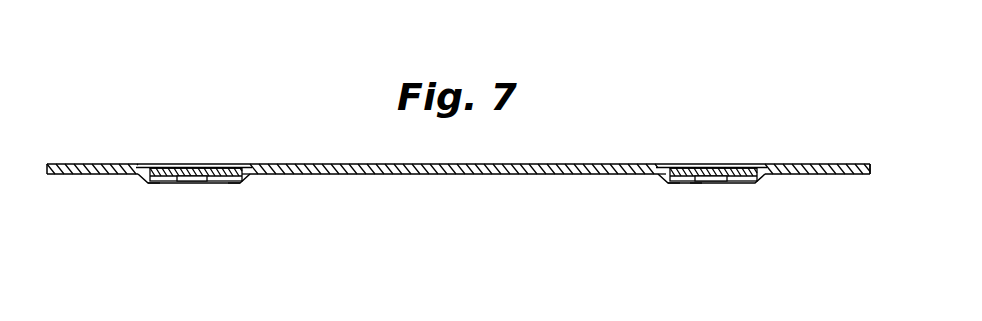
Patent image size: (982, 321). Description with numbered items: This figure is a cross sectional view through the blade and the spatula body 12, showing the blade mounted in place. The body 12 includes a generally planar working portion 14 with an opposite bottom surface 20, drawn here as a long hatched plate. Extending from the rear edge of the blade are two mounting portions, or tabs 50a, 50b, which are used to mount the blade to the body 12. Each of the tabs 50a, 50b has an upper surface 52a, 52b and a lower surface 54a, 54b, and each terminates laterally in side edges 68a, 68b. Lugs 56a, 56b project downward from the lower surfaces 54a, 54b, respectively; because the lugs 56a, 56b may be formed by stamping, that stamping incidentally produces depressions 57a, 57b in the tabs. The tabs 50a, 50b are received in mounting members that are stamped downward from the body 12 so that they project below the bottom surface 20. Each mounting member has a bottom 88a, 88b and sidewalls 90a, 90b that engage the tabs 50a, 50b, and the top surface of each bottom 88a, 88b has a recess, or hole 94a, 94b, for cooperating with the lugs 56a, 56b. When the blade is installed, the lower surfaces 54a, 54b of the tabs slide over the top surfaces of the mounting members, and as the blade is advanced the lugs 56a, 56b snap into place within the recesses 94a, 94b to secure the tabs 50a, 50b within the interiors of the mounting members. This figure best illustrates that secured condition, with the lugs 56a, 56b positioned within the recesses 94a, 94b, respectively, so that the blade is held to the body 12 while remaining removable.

The body 12 is at (819, 150).
The working portion 14 is at (78, 163).
The bottom surface 20 is at (472, 175).
The tab 50a is at (228, 172).
The tab 50b is at (733, 163).
The upper surface 52a is at (163, 165).
The upper surface 52b is at (672, 163).
The lower surface 54a is at (230, 178).
The lower surface 54b is at (733, 181).
The lug 56a is at (190, 181).
The lug 56b is at (730, 183).
The depression 57a is at (205, 165).
The depression 57b is at (718, 163).
The side edge 68a is at (248, 182).
The side edge 68b is at (667, 183).
The bottom 88a is at (175, 165).
The bottom 88b is at (748, 163).
The sidewall 90a is at (235, 165).
The sidewall 90b is at (675, 167).
The recess 94a is at (180, 182).
The recess 94b is at (695, 183).